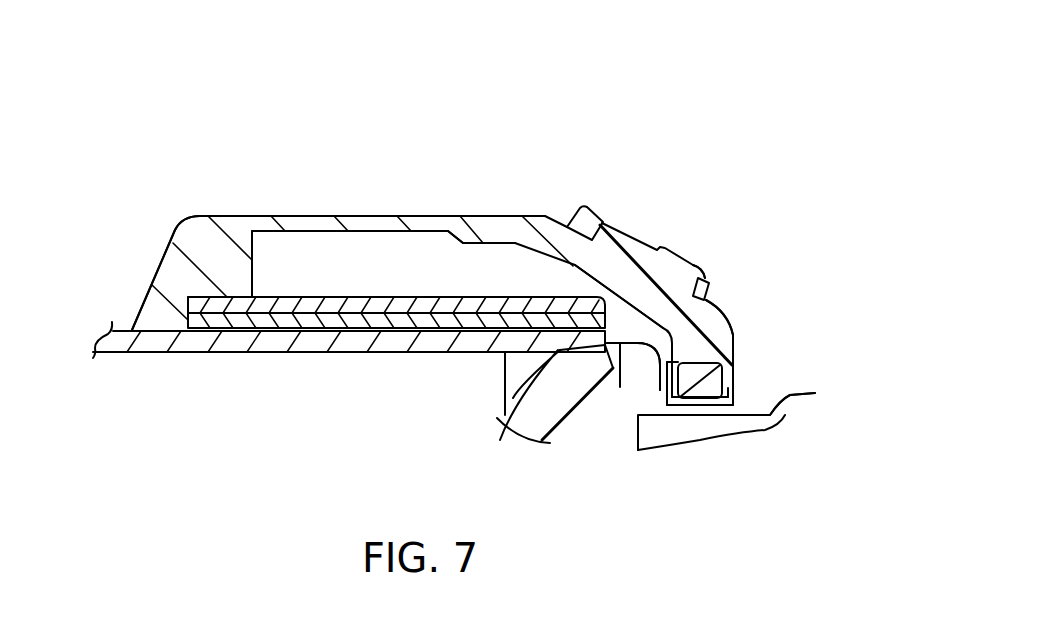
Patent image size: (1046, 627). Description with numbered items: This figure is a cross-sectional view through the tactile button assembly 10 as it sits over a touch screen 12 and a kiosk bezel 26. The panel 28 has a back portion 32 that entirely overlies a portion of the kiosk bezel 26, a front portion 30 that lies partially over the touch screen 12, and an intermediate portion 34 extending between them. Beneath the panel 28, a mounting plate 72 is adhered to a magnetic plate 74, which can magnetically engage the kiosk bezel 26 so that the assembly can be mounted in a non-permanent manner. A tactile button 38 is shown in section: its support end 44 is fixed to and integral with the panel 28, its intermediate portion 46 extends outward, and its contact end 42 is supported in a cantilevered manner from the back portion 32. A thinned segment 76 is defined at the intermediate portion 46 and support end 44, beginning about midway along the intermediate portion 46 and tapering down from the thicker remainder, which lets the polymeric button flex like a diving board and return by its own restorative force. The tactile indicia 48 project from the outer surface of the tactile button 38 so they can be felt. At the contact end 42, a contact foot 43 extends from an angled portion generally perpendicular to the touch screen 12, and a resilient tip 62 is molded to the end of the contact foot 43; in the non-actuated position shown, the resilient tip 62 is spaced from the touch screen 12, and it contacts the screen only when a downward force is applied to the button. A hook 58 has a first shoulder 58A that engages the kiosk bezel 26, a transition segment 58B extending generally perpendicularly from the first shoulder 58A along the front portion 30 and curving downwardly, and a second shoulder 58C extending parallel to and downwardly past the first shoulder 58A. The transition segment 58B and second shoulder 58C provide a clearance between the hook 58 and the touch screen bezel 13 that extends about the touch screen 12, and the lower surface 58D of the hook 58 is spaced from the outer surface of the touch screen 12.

The tactile button assembly 10 is at (585, 92).
The touch screen 12 is at (743, 423).
The touch screen bezel 13 is at (517, 373).
The kiosk bezel 26 is at (136, 334).
The panel 28 is at (183, 212).
The front portion 30 is at (742, 338).
The back portion 32 is at (155, 270).
The intermediate portion 34 is at (428, 212).
The tactile button 38 is at (692, 247).
The contact end 42 is at (727, 303).
The contact foot 43 is at (683, 342).
The support end 44 is at (257, 215).
The intermediate portion 46 is at (501, 214).
The tactile indicia 48 is at (613, 219).
The hook 58 is at (740, 365).
The first shoulder 58A is at (560, 350).
The transition segment 58B is at (577, 348).
The second shoulder 58C is at (612, 365).
The lower surface 58D is at (685, 407).
The resilient tip 62 is at (700, 392).
The mounting plate 72 is at (373, 314).
The magnetic plate 74 is at (302, 320).
The thinned segment 76 is at (363, 222).